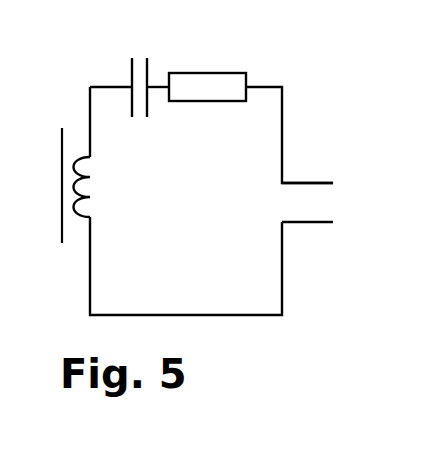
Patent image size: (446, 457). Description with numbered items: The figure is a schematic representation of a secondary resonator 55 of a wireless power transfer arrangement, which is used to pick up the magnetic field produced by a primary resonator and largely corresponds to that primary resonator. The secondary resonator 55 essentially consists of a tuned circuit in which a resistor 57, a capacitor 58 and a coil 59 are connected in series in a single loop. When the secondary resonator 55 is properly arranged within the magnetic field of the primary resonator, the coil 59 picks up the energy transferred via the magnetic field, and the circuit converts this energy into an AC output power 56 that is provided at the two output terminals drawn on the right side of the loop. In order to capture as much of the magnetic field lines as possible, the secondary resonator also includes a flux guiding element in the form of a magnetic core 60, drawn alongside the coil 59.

The secondary resonator 55 is at (292, 70).
The AC output power 56 is at (315, 202).
The resistor 57 is at (198, 72).
The capacitor 58 is at (142, 53).
The coil 59 is at (98, 188).
The magnetic core 60 is at (62, 123).